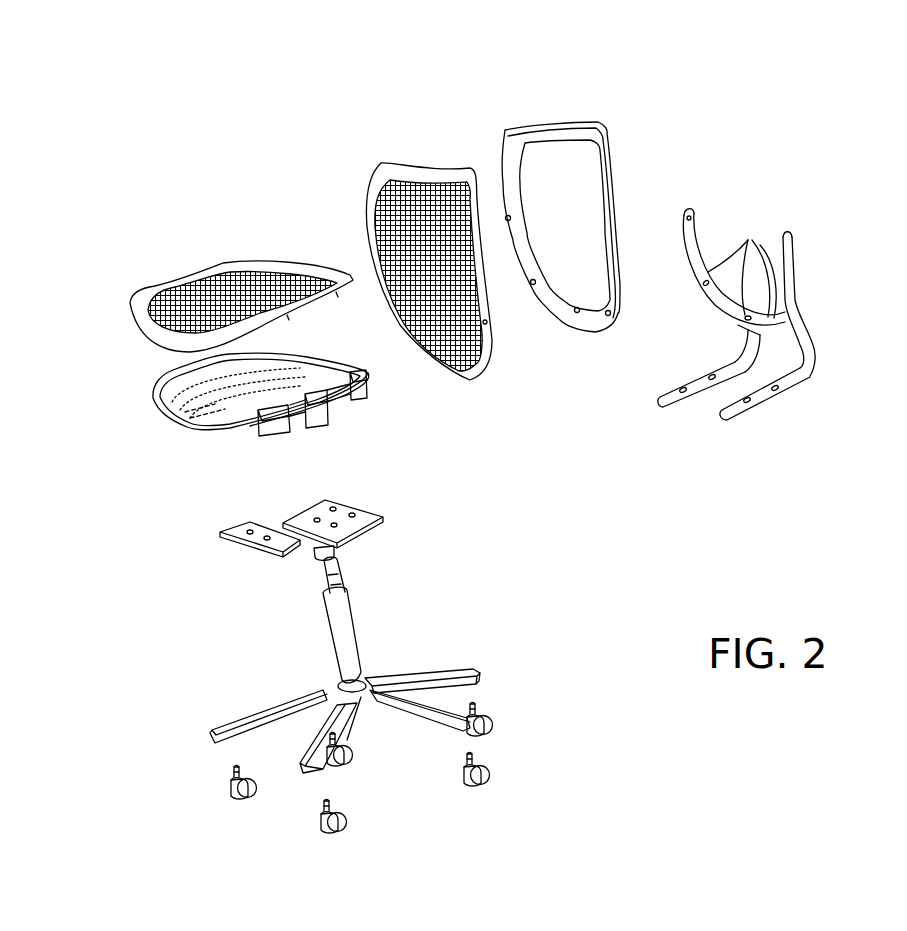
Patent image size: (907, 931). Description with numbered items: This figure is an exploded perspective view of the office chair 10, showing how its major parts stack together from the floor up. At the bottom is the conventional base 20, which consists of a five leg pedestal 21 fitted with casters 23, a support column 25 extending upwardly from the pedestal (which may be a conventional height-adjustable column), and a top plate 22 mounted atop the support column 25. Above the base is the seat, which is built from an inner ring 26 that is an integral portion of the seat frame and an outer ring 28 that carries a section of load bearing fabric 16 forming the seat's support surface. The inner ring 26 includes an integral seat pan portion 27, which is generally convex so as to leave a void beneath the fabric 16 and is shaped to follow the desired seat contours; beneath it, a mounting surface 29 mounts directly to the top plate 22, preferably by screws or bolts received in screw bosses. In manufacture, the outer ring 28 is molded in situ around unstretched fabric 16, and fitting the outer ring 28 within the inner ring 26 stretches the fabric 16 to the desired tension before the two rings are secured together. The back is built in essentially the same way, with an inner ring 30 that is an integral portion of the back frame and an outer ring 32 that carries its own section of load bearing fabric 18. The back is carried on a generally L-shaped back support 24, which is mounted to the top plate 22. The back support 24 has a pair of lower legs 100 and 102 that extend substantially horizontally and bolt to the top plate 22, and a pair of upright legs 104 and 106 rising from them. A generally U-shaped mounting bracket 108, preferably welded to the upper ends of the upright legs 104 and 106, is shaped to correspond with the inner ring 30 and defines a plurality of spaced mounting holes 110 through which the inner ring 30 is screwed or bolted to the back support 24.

The office chair 10 is at (143, 140).
The load bearing fabric 16 is at (250, 280).
The load bearing fabric 18 is at (462, 312).
The base 20 is at (378, 666).
The five leg pedestal 21 is at (490, 680).
The top plate 22 is at (236, 547).
The casters 23 is at (504, 769).
The back support 24 is at (746, 311).
The support column 25 is at (365, 621).
The inner ring 26 is at (218, 397).
The seat pan portion 27 is at (275, 388).
The outer ring 28 is at (241, 263).
The mounting surface 29 is at (300, 428).
The inner ring 30 is at (612, 122).
The outer ring 32 is at (417, 246).
The lower leg 100 is at (677, 391).
The lower leg 102 is at (790, 385).
The upright leg 104 is at (745, 327).
The upright leg 106 is at (812, 337).
The mounting bracket 108 is at (695, 250).
The mounting holes 110 is at (688, 215).